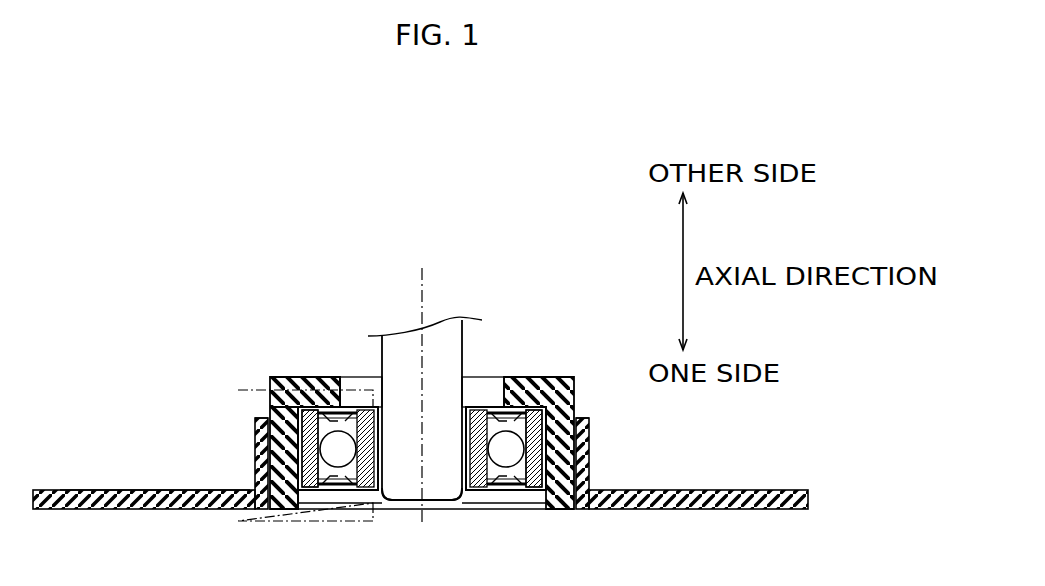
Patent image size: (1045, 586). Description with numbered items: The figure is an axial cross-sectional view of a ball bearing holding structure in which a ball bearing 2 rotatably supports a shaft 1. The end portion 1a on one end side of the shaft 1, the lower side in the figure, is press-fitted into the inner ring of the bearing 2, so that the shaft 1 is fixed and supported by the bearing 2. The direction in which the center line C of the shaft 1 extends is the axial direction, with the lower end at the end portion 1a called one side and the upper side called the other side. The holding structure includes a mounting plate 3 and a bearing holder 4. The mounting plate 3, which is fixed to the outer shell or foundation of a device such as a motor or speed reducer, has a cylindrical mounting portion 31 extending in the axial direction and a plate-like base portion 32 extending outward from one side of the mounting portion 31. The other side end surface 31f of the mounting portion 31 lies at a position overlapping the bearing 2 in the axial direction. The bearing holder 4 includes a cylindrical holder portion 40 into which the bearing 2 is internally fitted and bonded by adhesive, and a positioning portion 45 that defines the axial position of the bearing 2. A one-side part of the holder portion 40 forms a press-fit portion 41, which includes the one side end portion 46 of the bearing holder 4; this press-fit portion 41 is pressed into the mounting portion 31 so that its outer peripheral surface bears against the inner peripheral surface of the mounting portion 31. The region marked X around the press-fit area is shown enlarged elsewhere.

The shaft 1 is at (466, 348).
The end portion 1a is at (432, 499).
The ball bearing 2 is at (471, 496).
The mounting plate 3 is at (82, 477).
The base portion 32 is at (133, 488).
The mounting portion 31 is at (254, 452).
The other side end surface 31f is at (261, 417).
The bearing holder 4 is at (278, 373).
The positioning portion 45 is at (322, 378).
The one side end portion 46 is at (305, 497).
The holder portion 40 is at (347, 513).
The press-fit portion 41 is at (316, 492).
The center line C is at (422, 381).
The enlarged region X is at (238, 521).